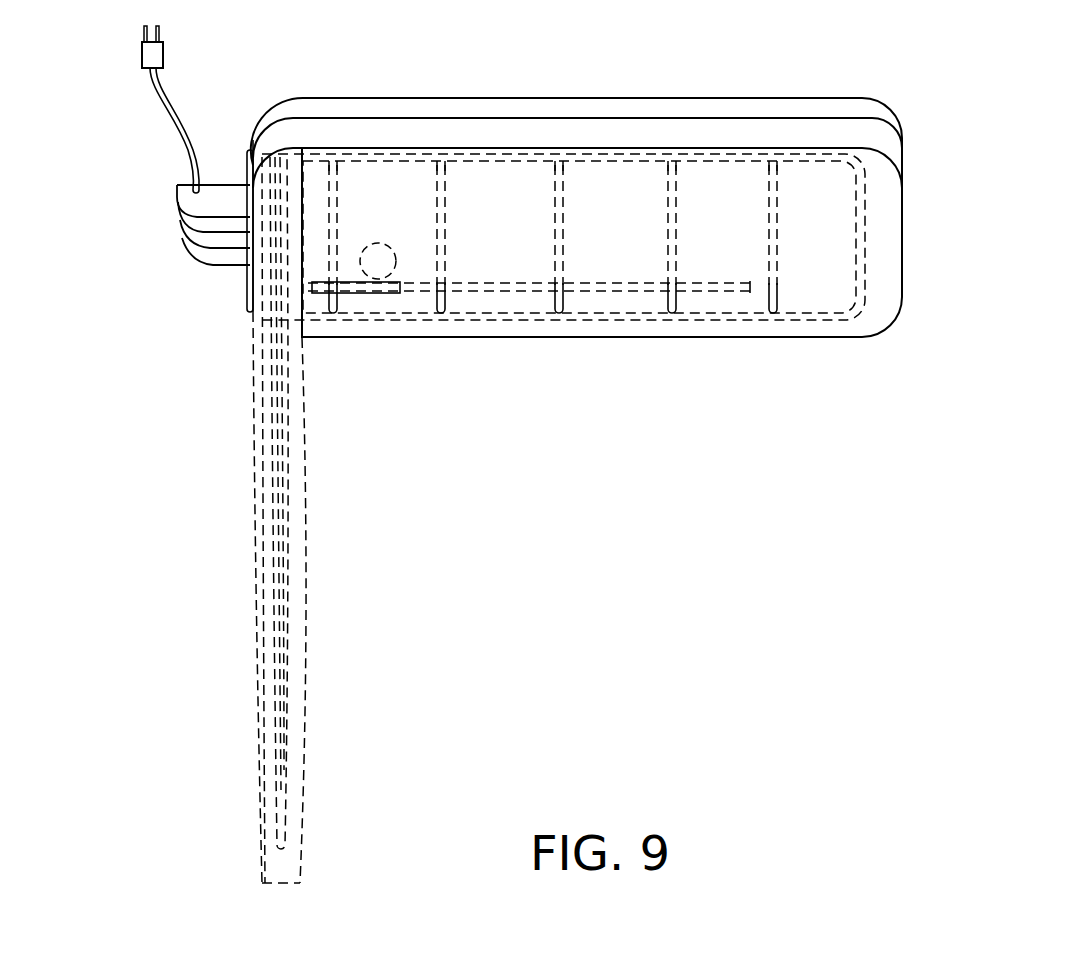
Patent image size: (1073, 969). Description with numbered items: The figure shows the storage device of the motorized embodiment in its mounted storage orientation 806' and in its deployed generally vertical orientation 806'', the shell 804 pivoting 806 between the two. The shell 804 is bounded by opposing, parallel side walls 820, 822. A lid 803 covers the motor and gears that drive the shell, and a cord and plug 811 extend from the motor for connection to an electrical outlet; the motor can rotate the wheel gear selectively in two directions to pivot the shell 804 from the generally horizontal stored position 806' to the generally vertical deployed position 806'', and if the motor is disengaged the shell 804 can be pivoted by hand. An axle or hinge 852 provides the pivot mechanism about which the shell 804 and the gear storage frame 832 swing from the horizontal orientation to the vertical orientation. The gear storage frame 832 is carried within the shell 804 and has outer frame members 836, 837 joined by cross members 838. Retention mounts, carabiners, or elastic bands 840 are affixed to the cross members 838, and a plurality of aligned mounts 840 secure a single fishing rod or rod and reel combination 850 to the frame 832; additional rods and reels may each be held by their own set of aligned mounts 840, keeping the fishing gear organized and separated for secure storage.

The cord and plug 811 is at (151, 91).
The lid 803 is at (203, 266).
The axle or hinge 852 is at (250, 288).
The side wall 820 is at (805, 135).
The shell 804 is at (550, 342).
The side wall 822 is at (727, 337).
The stored position 806' is at (981, 245).
The deployed position 806'' is at (229, 520).
The pivoting 806 is at (576, 421).
The outer frame member 836 is at (600, 158).
The outer frame member 837 is at (641, 318).
The cross member 838 is at (563, 226).
The retention mount 840 is at (445, 290).
The gear storage frame 832 is at (557, 247).
The fishing rod 850 is at (400, 276).